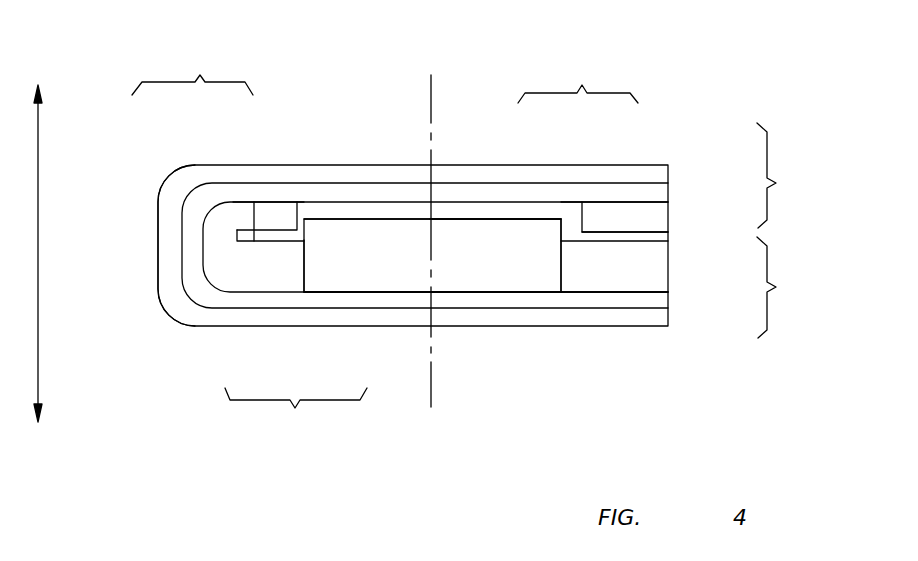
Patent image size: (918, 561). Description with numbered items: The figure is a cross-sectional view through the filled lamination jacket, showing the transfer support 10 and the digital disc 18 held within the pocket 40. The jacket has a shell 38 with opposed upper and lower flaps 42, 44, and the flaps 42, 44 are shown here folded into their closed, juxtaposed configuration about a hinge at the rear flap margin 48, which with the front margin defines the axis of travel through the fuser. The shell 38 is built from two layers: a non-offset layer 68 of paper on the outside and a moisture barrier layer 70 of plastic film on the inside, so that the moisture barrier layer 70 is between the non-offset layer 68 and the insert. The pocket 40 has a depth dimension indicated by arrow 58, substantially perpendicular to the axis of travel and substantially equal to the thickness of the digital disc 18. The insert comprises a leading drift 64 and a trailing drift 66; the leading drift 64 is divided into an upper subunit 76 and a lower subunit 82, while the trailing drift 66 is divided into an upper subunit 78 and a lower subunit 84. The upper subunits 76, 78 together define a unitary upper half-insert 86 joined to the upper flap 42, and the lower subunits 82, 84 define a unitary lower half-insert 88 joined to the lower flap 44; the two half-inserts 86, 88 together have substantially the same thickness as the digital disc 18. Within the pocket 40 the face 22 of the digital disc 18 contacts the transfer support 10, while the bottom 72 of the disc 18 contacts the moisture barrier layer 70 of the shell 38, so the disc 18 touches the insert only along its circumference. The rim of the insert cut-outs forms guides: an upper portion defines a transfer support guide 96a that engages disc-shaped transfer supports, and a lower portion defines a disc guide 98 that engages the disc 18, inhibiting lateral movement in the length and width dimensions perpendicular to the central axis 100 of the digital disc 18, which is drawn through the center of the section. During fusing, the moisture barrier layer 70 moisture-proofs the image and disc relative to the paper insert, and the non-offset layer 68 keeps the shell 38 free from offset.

The transfer support 10 is at (273, 202).
The digital disc 18 is at (397, 250).
The face 22 is at (353, 218).
The shell 38 is at (296, 415).
The pocket 40 is at (469, 212).
The upper flap 42 is at (780, 183).
The lower flap 44 is at (780, 287).
The rear flap margin 48 is at (138, 233).
The depth dimension arrow 58 is at (38, 290).
The leading drift 64 is at (583, 82).
The trailing drift 66 is at (203, 72).
The non-offset layer 68 is at (670, 172).
The moisture barrier layer 70 is at (670, 193).
The bottom 72 is at (488, 292).
The upper subunit of leading drift 76 is at (552, 202).
The upper subunit of trailing drift 78 is at (244, 202).
The lower subunit of leading drift 82 is at (613, 241).
The lower subunit of trailing drift 84 is at (254, 202).
The upper half-insert 86 is at (670, 222).
The lower half-insert 88 is at (670, 263).
The transfer support guide 96a is at (560, 266).
The digital disc guide 98 is at (305, 253).
The central axis 100 is at (433, 378).